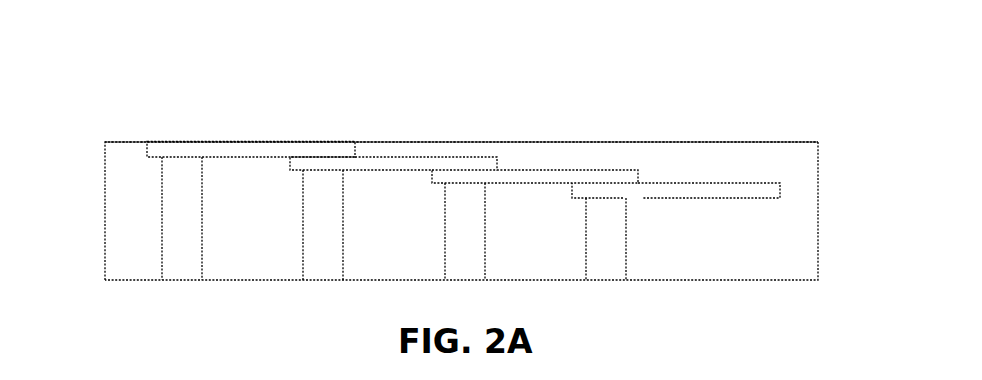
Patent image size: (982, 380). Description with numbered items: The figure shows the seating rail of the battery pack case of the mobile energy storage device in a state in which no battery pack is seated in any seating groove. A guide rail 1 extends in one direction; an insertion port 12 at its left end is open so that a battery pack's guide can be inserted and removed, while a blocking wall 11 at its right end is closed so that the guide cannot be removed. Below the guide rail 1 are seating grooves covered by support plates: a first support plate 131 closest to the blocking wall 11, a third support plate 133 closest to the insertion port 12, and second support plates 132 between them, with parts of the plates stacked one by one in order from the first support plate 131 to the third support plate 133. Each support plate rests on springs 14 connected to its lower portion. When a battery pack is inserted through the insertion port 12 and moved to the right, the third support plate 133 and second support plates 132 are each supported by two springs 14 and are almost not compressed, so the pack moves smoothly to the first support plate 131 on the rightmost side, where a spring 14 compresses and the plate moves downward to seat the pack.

The guide rail 1 is at (133, 132).
The blocking wall 11 is at (820, 146).
The insertion port 12 is at (103, 148).
The first support plate 131 is at (713, 177).
The second support plate 132 is at (520, 163).
The third support plate 133 is at (314, 138).
The spring 14 is at (582, 244).